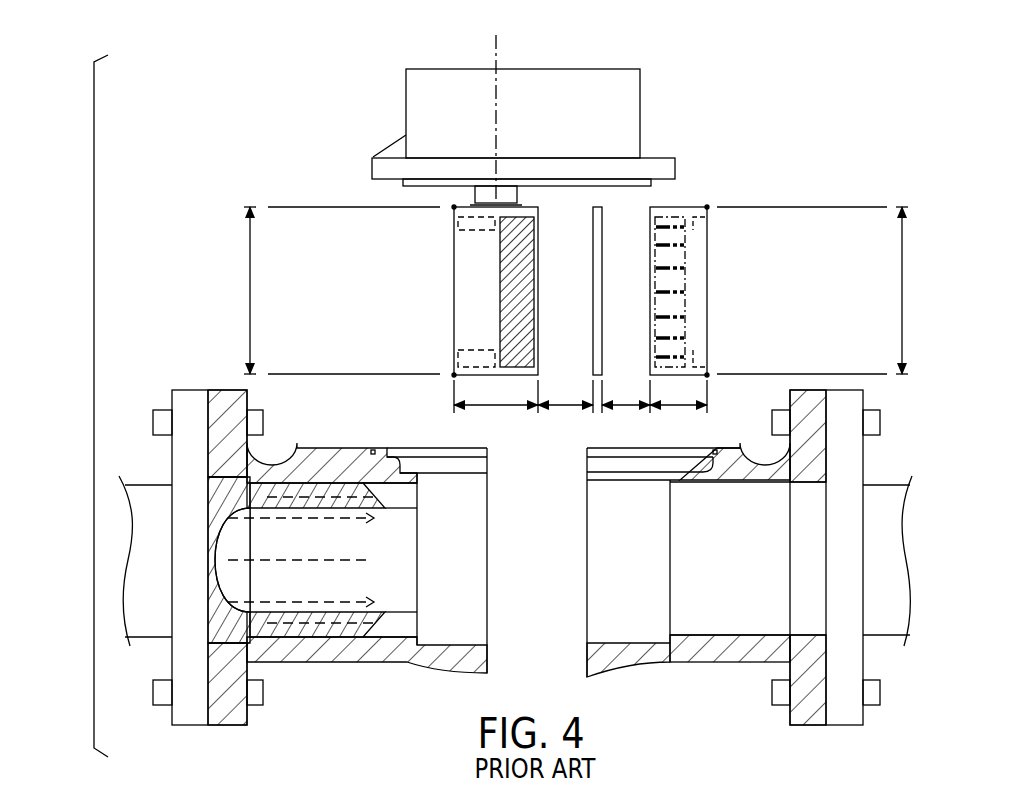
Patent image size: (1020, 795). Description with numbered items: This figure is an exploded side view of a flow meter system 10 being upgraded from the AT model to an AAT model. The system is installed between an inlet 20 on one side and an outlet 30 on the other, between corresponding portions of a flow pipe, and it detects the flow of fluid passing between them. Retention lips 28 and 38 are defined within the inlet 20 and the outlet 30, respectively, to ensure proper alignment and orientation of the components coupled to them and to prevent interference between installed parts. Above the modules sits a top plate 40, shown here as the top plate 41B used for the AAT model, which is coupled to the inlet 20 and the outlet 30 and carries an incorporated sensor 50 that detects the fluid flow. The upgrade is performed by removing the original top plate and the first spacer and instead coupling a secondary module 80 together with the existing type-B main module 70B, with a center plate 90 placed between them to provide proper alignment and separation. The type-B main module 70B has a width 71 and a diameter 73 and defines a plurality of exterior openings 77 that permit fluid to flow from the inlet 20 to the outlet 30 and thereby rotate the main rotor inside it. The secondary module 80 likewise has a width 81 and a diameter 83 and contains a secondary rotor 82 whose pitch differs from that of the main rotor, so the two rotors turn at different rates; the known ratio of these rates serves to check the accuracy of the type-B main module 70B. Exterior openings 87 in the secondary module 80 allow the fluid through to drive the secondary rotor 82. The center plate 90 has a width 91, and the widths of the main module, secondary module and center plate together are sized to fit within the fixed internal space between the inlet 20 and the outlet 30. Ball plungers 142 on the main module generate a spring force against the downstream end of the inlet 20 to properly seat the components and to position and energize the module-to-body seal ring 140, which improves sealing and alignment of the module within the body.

The flow meter system 10 is at (60, 437).
The inlet 20 is at (215, 366).
The retention lip 28 is at (418, 645).
The outlet 30 is at (810, 376).
The retention lip 38 is at (663, 645).
The top plate 40 is at (368, 157).
The top plate for AAT model 41B is at (518, 119).
The sensor 50 is at (460, 80).
The type-B main module 70B is at (443, 203).
The width 71 is at (494, 405).
The diameter 73 is at (250, 290).
The exterior openings 77 is at (475, 225).
The secondary module 80 is at (690, 176).
The width 81 is at (680, 405).
The secondary rotor 82 is at (675, 306).
The diameter 83 is at (902, 290).
The exterior openings 87 is at (708, 250).
The center plate 90 is at (600, 267).
The width 91 is at (556, 404).
The module-to-body seal ring 140 is at (708, 206).
The ball plungers 142 is at (450, 380).